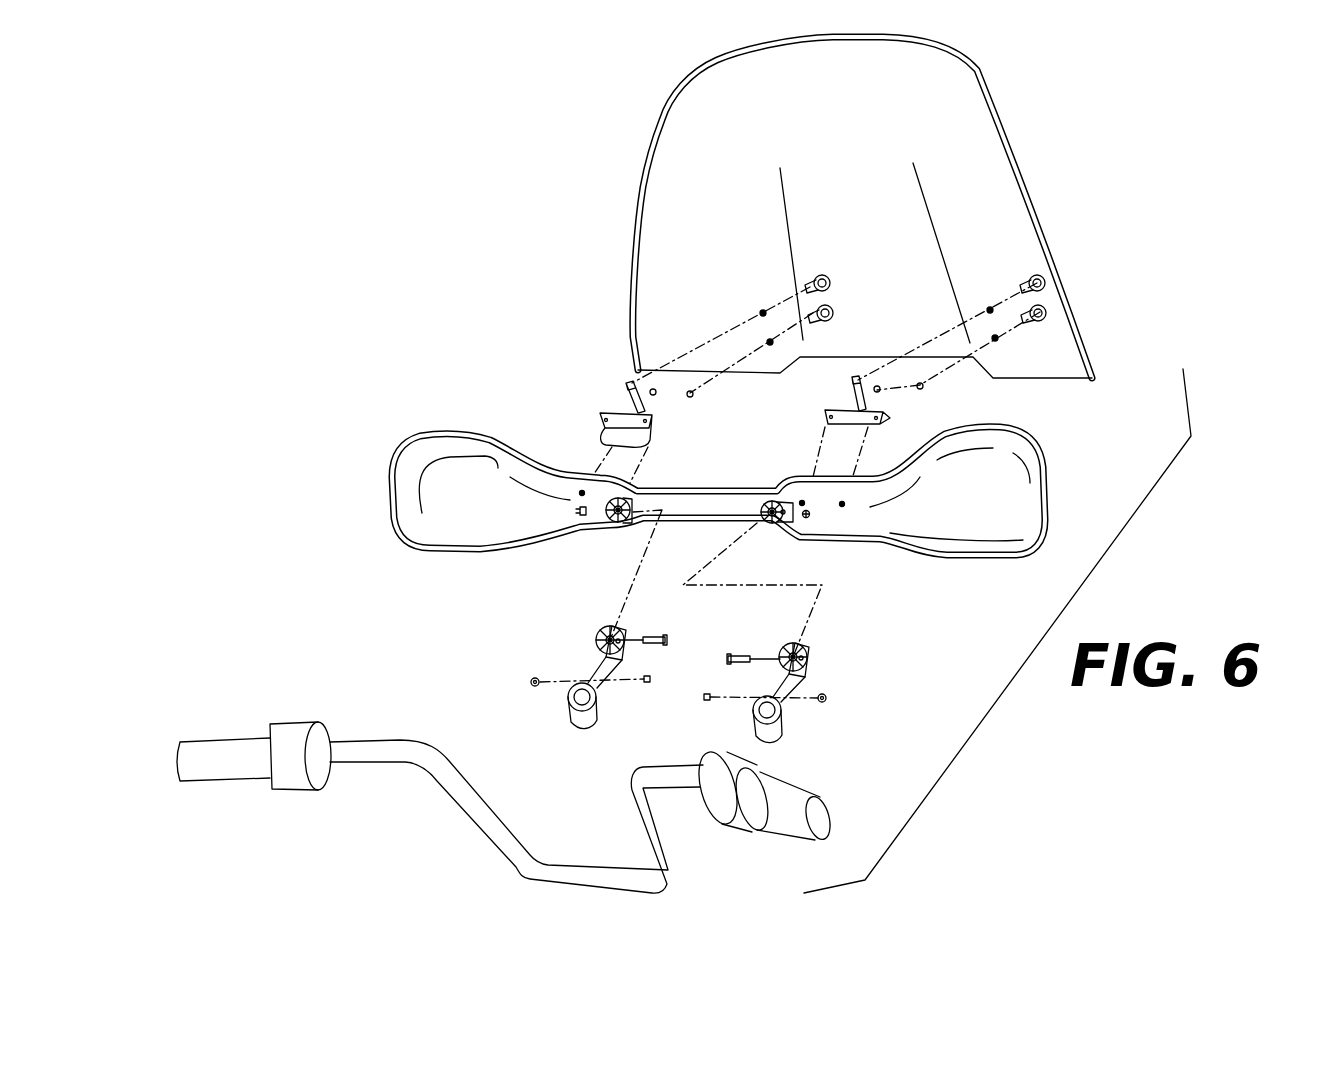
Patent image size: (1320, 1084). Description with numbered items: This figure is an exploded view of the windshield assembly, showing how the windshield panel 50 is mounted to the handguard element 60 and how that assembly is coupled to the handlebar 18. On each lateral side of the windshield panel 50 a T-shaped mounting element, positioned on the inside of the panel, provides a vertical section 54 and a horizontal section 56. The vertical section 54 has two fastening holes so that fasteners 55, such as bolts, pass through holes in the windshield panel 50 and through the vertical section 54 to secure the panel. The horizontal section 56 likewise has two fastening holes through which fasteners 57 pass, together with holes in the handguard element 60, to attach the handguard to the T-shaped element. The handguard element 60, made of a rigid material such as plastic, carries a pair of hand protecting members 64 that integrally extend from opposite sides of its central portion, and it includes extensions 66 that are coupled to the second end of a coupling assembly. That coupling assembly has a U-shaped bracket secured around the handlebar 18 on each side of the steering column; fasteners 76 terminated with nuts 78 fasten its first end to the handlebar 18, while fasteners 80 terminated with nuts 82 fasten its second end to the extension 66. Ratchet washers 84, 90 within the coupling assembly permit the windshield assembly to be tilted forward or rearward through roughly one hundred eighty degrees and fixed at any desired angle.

The handlebar 18 is at (482, 828).
The windshield panel 50 is at (805, 197).
The vertical section 54 is at (626, 392).
The fasteners 55 is at (832, 305).
The horizontal section 56 is at (602, 440).
The fasteners 57 is at (745, 406).
The handguard element 60 is at (744, 452).
The hand protecting members 64 is at (477, 437).
The extensions 66 is at (757, 487).
The fasteners 76 is at (666, 640).
The nuts 78 is at (578, 512).
The fasteners 80 is at (668, 685).
The nuts 82 is at (530, 682).
The ratchet washer 84 is at (607, 530).
The ratchet washer 90 is at (617, 627).